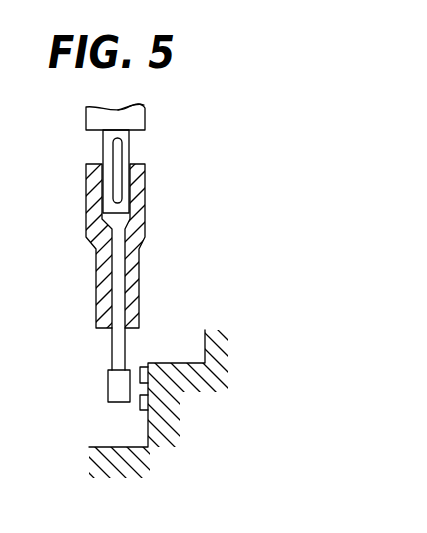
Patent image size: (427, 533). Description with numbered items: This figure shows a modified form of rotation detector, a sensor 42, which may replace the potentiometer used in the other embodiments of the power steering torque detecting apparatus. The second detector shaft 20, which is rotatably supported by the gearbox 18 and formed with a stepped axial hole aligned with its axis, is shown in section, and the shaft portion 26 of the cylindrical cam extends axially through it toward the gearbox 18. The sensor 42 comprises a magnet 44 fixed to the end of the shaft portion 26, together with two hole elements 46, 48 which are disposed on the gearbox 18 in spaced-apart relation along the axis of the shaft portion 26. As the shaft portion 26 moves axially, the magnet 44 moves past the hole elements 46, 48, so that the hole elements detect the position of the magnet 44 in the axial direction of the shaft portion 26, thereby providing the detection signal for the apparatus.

The gearbox 18 is at (90, 447).
The second detector shaft 20 is at (141, 217).
The shaft portion 26 is at (124, 149).
The sensor 42 is at (82, 380).
The magnet 44 is at (108, 397).
The hole element 46 is at (143, 366).
The hole element 48 is at (146, 410).